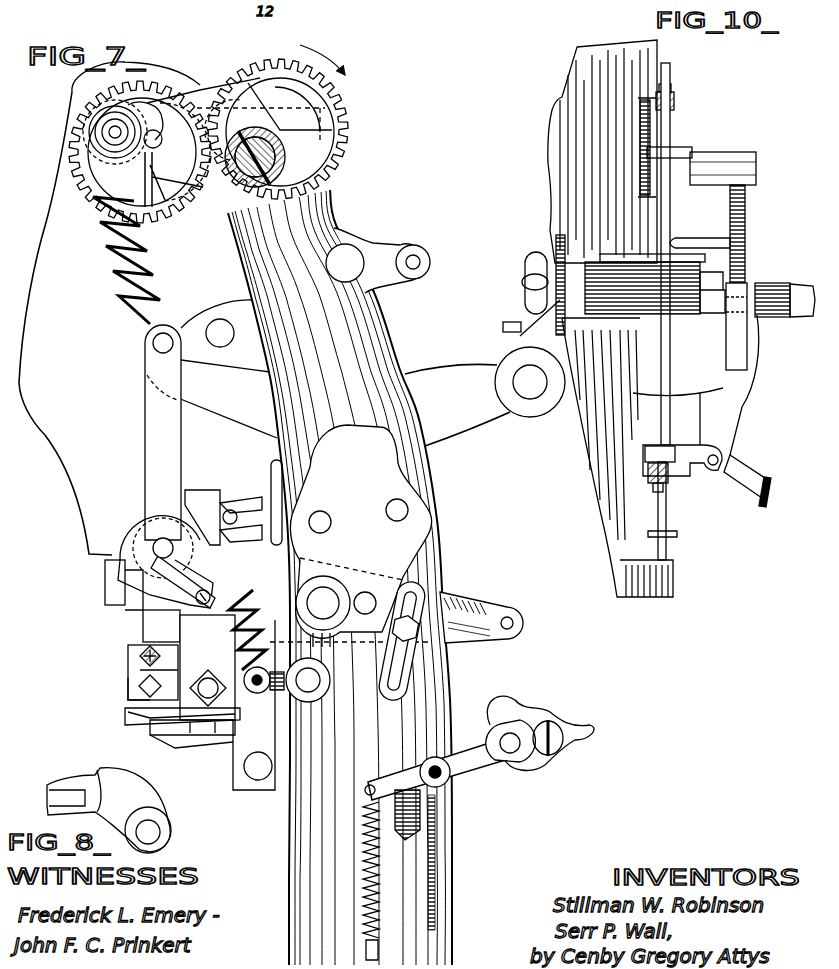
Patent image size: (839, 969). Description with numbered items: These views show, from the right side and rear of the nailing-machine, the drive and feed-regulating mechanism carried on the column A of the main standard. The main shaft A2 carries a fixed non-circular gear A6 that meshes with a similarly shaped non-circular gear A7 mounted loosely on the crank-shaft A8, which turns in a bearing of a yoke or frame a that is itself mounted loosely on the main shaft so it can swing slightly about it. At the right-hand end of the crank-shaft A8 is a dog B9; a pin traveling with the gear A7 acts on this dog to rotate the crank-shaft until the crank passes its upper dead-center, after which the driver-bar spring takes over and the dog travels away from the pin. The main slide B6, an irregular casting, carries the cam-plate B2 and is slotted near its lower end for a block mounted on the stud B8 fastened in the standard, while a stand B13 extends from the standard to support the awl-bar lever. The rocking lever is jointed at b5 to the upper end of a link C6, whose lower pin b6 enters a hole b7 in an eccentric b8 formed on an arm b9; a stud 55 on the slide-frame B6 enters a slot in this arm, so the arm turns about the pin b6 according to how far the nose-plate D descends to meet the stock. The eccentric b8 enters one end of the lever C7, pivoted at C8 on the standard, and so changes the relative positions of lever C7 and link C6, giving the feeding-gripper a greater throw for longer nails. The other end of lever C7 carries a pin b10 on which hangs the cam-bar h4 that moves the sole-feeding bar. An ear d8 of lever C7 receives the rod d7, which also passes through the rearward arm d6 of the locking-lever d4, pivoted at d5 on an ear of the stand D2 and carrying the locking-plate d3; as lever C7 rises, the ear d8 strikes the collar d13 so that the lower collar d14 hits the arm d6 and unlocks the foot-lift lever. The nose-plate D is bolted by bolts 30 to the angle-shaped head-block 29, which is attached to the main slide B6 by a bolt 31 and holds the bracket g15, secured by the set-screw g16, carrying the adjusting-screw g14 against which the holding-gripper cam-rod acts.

In FIG. 10, the column A is at (558, 156).
In FIG. 7, the main shaft A2 is at (278, 152).
In FIG. 7, the non-circular gear A6 is at (344, 104).
In FIG. 7, the non-circular gear A7 is at (210, 210).
In FIG. 7, the crank-shaft A8 is at (108, 128).
In FIG. 7, the yoke or frame a is at (147, 103).
In FIG. 7, the cam-plate B2 is at (148, 614).
In FIG. 7, the main slide B6 is at (46, 424).
In FIG. 7, the stud B8 is at (315, 680).
In FIG. 7, the dog B9 is at (145, 106).
In FIG. 7, the stand B13 is at (485, 396).
In FIG. 7, the joint b5 is at (153, 343).
In FIG. 7, the pin b6 is at (162, 546).
In FIG. 8, the hole b7 is at (145, 834).
In FIG. 8, the eccentric b8 is at (166, 825).
In FIG. 7, the arm b9 is at (197, 500).
In FIG. 8, the arm b9 is at (125, 780).
In FIG. 7, the pin b10 is at (508, 623).
In FIG. 7, the link C6 is at (155, 408).
In FIG. 7, the lever C7 is at (132, 527).
In FIG. 10, the lever C7 is at (702, 153).
In FIG. 7, the pivot C8 is at (322, 603).
In FIG. 7, the nose-plate D is at (124, 712).
In FIG. 10, the stand D2 is at (767, 353).
In FIG. 10, the locking-plate d3 is at (769, 492).
In FIG. 10, the locking-lever d4 is at (748, 470).
In FIG. 10, the pivot d5 is at (713, 465).
In FIG. 10, the arm d6 is at (657, 443).
In FIG. 10, the rod d7 is at (672, 352).
In FIG. 7, the ear d8 is at (460, 598).
In FIG. 10, the ear d8 is at (670, 147).
In FIG. 10, the collar d13 is at (673, 100).
In FIG. 10, the collar d14 is at (669, 483).
In FIG. 7, the adjusting-screw g14 is at (143, 650).
In FIG. 7, the bracket g15 is at (160, 676).
In FIG. 7, the set-screw g16 is at (140, 690).
In FIG. 10, the cam-bar h4 is at (730, 337).
In FIG. 7, the angle-shaped head-block 29 is at (143, 687).
In FIG. 7, the bolts 30 is at (200, 724).
In FIG. 7, the bolt 31 is at (207, 683).
In FIG. 7, the stud 55 is at (233, 513).